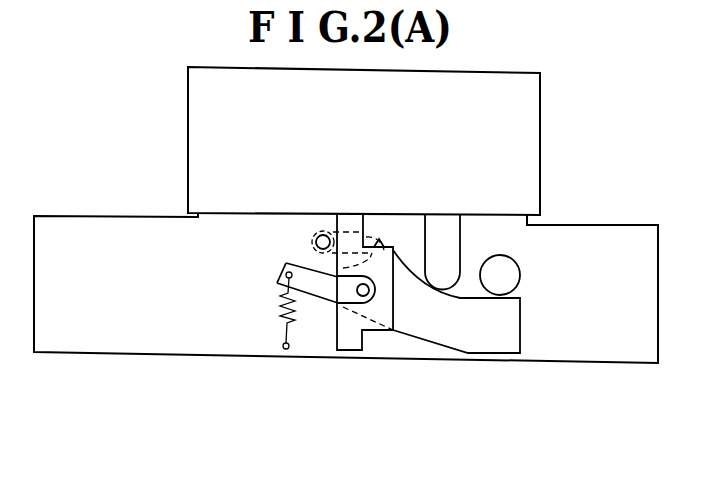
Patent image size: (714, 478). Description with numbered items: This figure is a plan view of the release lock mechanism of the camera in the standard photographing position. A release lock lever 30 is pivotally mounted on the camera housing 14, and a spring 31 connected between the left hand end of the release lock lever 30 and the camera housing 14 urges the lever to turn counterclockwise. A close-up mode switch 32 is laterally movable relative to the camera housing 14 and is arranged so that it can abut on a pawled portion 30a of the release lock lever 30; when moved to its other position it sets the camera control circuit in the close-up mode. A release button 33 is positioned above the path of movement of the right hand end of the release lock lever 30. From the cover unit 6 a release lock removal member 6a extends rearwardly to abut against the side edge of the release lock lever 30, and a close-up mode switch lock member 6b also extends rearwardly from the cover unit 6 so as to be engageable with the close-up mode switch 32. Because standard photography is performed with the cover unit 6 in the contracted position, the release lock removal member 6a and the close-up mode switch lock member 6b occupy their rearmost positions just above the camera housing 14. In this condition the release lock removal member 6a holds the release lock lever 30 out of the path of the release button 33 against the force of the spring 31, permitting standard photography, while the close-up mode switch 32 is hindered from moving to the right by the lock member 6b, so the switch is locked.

The cover unit 6 is at (525, 105).
The release lock removal member 6a is at (455, 247).
The close-up mode switch lock member 6b is at (348, 342).
The camera housing 14 is at (638, 243).
The release lock lever 30 is at (508, 322).
The pawled portion 30a is at (380, 243).
The spring 31 is at (278, 318).
The close-up mode switch 32 is at (312, 240).
The release button 33 is at (513, 268).